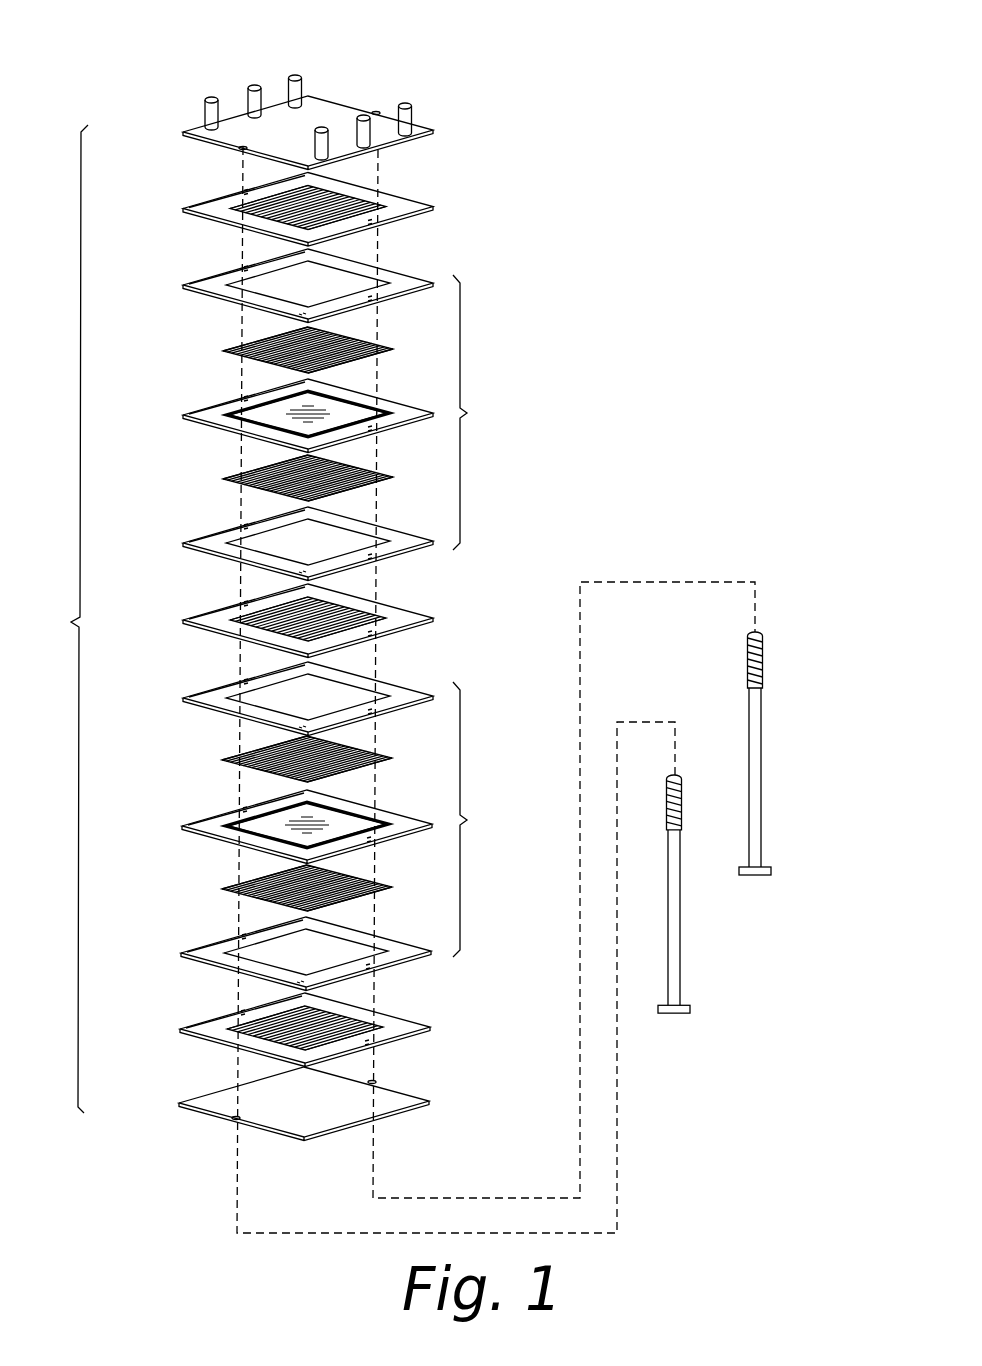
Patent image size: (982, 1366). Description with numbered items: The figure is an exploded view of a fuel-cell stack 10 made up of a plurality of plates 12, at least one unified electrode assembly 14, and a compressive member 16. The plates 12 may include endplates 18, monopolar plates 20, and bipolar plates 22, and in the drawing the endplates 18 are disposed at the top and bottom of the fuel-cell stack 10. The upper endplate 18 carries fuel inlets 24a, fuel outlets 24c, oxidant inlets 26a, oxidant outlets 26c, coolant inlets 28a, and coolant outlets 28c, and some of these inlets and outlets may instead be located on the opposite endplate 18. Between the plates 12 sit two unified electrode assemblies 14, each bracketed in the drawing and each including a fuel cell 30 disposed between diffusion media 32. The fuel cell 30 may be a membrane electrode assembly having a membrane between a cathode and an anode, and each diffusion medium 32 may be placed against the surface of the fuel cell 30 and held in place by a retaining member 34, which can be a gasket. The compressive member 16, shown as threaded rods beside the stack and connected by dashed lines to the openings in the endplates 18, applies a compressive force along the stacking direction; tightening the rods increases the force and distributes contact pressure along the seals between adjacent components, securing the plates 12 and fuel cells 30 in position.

The fuel-cell stack 10 is at (64, 619).
The plates 12 is at (496, 105).
The unified electrode assembly 14 is at (475, 616).
The compressive member 16 is at (761, 742).
The endplates 18 is at (185, 137).
The monopolar plates 20 is at (200, 203).
The bipolar plates 22 is at (200, 615).
The fuel inlets 24a is at (322, 127).
The fuel outlets 24c is at (295, 75).
The oxidant inlets 26a is at (412, 113).
The oxidant outlets 26c is at (205, 108).
The coolant inlets 28a is at (363, 115).
The coolant outlets 28c is at (252, 85).
The fuel cell 30 is at (198, 410).
The diffusion media 32 is at (233, 349).
The retaining member 34 is at (200, 281).